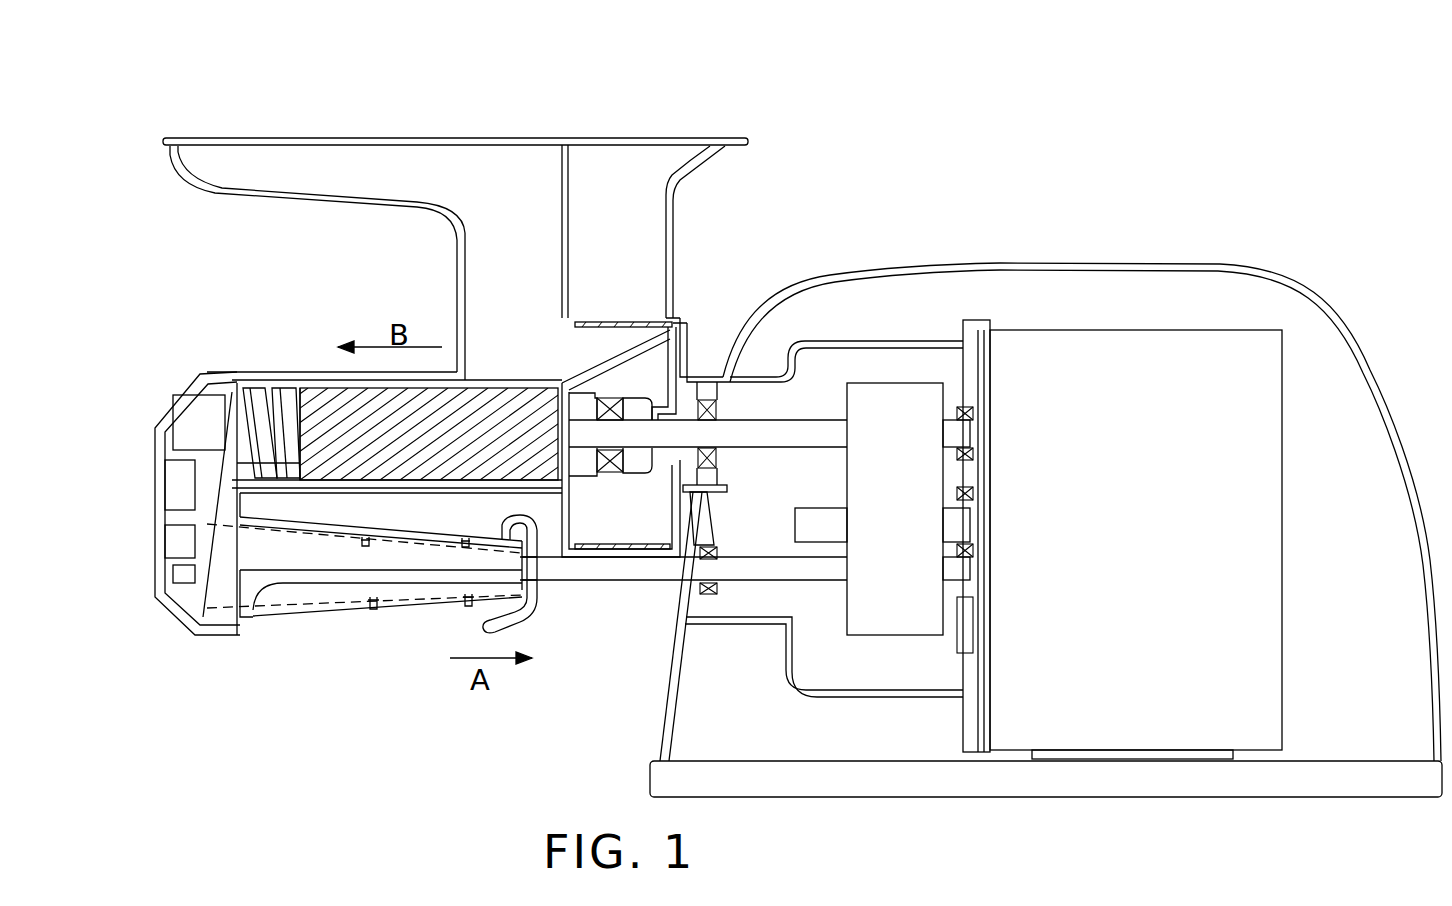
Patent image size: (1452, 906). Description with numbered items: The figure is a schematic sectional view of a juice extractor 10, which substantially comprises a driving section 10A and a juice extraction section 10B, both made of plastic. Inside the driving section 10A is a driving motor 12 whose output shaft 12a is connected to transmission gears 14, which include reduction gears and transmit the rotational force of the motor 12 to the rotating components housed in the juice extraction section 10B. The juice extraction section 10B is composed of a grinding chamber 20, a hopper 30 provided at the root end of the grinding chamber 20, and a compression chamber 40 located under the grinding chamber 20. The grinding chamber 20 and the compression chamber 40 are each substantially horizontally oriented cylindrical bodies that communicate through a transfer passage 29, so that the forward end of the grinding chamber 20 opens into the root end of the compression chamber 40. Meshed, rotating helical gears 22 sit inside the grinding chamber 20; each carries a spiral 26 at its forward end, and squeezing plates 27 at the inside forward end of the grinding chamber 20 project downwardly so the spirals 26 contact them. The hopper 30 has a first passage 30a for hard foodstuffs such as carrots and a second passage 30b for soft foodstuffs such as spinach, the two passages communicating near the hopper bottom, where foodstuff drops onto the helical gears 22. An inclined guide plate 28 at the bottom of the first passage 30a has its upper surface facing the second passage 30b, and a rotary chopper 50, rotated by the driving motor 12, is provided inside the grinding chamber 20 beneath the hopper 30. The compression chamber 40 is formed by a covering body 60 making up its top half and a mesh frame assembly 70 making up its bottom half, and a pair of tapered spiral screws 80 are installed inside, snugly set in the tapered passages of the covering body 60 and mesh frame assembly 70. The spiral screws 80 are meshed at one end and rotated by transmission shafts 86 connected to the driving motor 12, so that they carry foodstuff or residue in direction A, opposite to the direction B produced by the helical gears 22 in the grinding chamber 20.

The juice extractor 10 is at (985, 180).
The driving section 10A is at (1228, 241).
The juice extraction section 10B is at (402, 121).
The driving motor 12 is at (1260, 737).
The output shaft 12a is at (806, 527).
The transmission gears 14 is at (889, 613).
The grinding chamber 20 is at (278, 375).
The helical gears 22 is at (333, 408).
The spiral 26 is at (277, 400).
The squeezing plates 27 is at (237, 397).
The guide plate 28 is at (618, 350).
The transfer passage 29 is at (218, 497).
The hopper 30 is at (518, 160).
The first passage 30a is at (663, 158).
The second passage 30b is at (322, 167).
The compression chamber 40 is at (208, 592).
The rotary chopper 50 is at (648, 322).
The covering body 60 is at (520, 523).
The mesh frame assembly 70 is at (406, 590).
The spiral screws 80 is at (295, 597).
The transmission shafts 86 is at (642, 578).